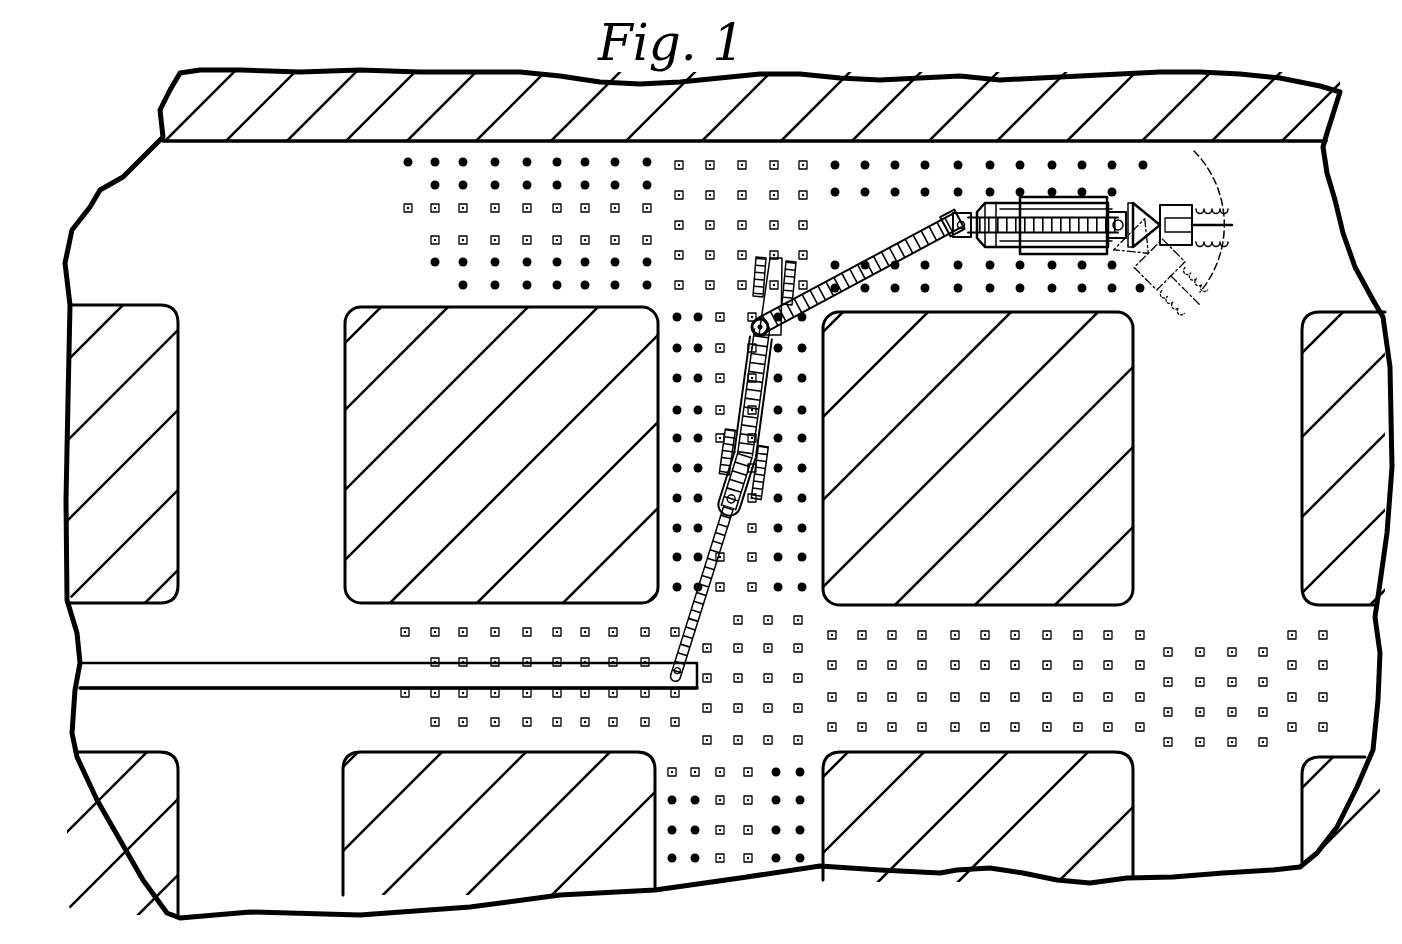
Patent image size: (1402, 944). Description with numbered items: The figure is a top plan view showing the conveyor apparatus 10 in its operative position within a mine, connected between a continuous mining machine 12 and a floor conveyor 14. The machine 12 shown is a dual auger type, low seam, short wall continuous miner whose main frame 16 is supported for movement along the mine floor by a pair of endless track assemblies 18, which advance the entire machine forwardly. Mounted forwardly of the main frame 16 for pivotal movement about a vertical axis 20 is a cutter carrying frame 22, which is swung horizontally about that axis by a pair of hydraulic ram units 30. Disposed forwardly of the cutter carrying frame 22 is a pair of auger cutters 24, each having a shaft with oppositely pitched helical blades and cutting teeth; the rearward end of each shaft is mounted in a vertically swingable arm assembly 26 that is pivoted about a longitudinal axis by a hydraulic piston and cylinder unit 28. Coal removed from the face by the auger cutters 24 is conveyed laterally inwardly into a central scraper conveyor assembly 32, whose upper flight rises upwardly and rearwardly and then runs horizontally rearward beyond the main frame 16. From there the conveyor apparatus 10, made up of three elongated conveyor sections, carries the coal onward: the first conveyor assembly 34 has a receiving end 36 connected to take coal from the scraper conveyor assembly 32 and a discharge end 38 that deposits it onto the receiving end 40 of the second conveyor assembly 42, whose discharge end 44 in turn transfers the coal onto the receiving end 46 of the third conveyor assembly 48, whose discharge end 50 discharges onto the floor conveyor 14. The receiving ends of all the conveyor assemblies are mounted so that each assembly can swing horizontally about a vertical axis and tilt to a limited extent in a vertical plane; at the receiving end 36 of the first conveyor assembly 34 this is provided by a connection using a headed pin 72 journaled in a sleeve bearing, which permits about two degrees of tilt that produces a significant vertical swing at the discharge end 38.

The conveyor apparatus 10 is at (868, 254).
The continuous mining machine 12 is at (1072, 186).
The floor conveyor 14 is at (343, 655).
The main frame 16 is at (1003, 250).
The endless track assemblies 18 is at (1065, 255).
The vertical axis 20 is at (1129, 209).
The cutter carrying frame 22 is at (1197, 290).
The auger cutters 24 is at (1223, 210).
The arm assembly 26 is at (1191, 197).
The hydraulic piston and cylinder unit 28 is at (1232, 226).
The hydraulic ram units 30 is at (1121, 253).
The central scraper conveyor assembly 32 is at (1006, 202).
The first conveyor assembly 34 is at (862, 296).
The receiving end 36 is at (962, 213).
The discharge end 38 is at (772, 333).
The receiving end 40 is at (754, 286).
The second conveyor assembly 42 is at (726, 524).
The discharge end 44 is at (745, 507).
The receiving end 46 is at (748, 473).
The third conveyor assembly 48 is at (690, 566).
The discharge end 50 is at (673, 649).
The headed pin 72 is at (890, 205).